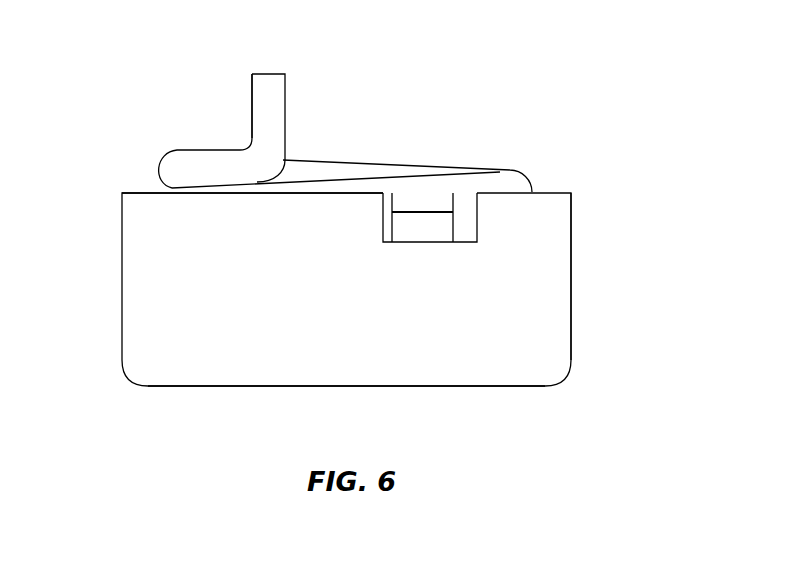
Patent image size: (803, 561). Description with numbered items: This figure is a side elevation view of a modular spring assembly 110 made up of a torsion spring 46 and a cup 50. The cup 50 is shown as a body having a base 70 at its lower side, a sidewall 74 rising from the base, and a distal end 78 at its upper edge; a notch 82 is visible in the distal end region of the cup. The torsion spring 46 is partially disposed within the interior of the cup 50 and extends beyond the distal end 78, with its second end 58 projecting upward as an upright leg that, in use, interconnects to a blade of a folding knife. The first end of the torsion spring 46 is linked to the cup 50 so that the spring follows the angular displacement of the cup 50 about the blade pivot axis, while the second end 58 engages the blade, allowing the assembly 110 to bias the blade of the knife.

The torsion spring 46 is at (170, 141).
The cup 50 is at (110, 283).
The second end 58 is at (287, 93).
The base 70 is at (493, 388).
The sidewall 74 is at (572, 292).
The distal end 78 is at (140, 192).
The slot in base 82 is at (462, 208).
The modular spring assembly 110 is at (635, 88).